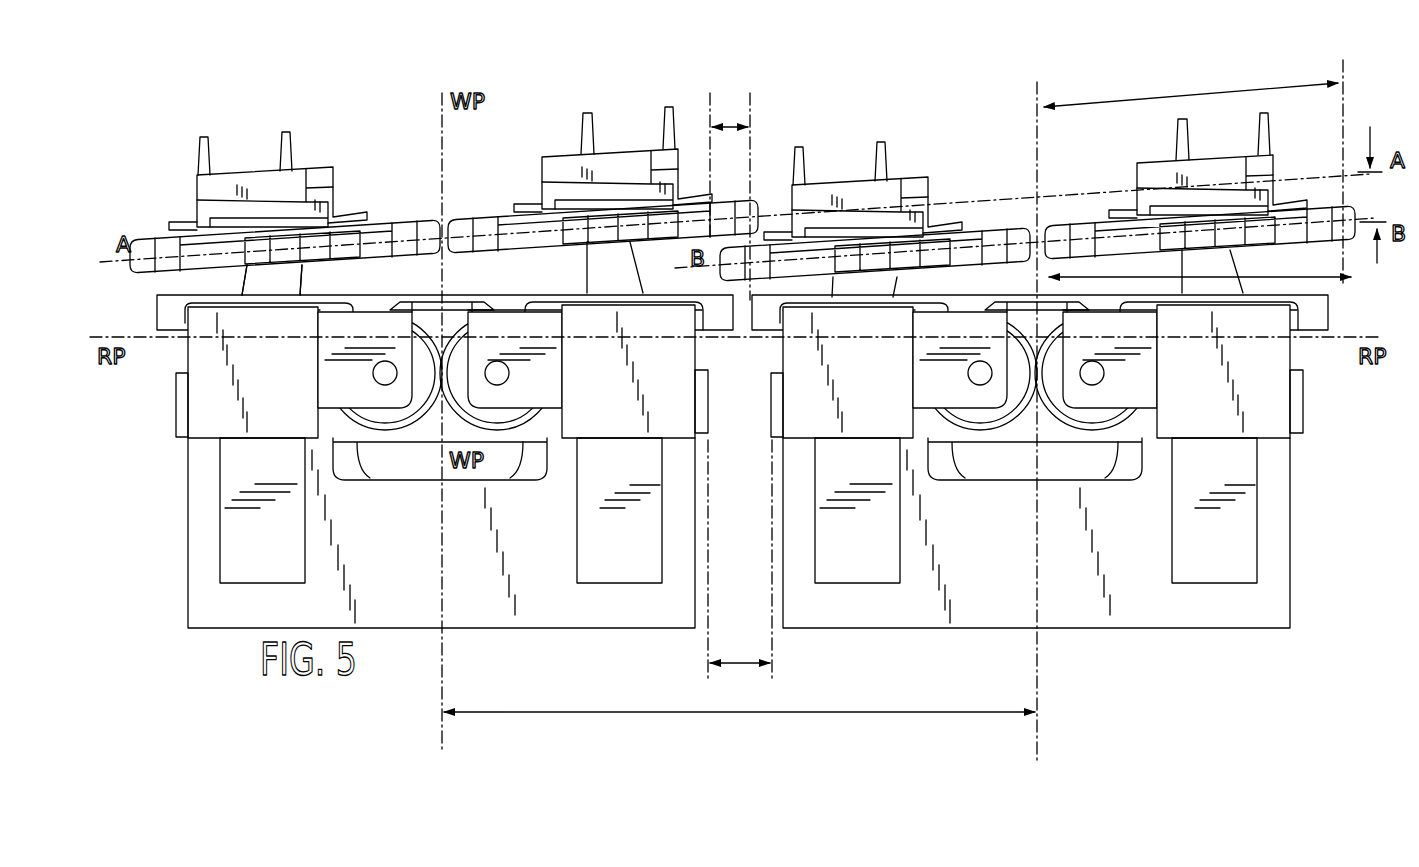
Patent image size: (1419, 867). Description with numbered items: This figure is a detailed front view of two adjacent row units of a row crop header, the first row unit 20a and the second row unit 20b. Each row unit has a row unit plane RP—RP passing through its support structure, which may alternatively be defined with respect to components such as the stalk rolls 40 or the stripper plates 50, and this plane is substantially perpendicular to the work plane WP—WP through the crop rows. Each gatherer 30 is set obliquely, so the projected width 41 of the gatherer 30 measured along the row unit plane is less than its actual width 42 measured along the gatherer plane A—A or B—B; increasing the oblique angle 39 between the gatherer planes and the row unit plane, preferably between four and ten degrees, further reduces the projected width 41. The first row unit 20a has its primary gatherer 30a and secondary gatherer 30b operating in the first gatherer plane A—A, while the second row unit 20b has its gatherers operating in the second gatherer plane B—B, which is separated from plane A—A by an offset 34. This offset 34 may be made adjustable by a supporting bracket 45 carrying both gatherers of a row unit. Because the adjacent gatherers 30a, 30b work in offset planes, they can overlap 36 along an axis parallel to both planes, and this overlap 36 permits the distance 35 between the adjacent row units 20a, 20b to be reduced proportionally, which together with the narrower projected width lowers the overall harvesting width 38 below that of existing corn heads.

The first row unit 20a is at (185, 585).
The second row unit 20b is at (1300, 573).
The gatherer 30 is at (244, 146).
The primary gatherer 30a is at (620, 125).
The secondary gatherer 30b is at (852, 162).
The offset 34 is at (1380, 248).
The distance 35 is at (738, 657).
The overlap 36 is at (723, 123).
The harvesting width 38 is at (737, 713).
The oblique angle 39 is at (1350, 130).
The stalk roll 40 is at (987, 410).
The projected width 41 is at (1273, 275).
The actual width 42 is at (1183, 93).
The supporting bracket 45 is at (303, 280).
The stripper plate 50 is at (1083, 304).